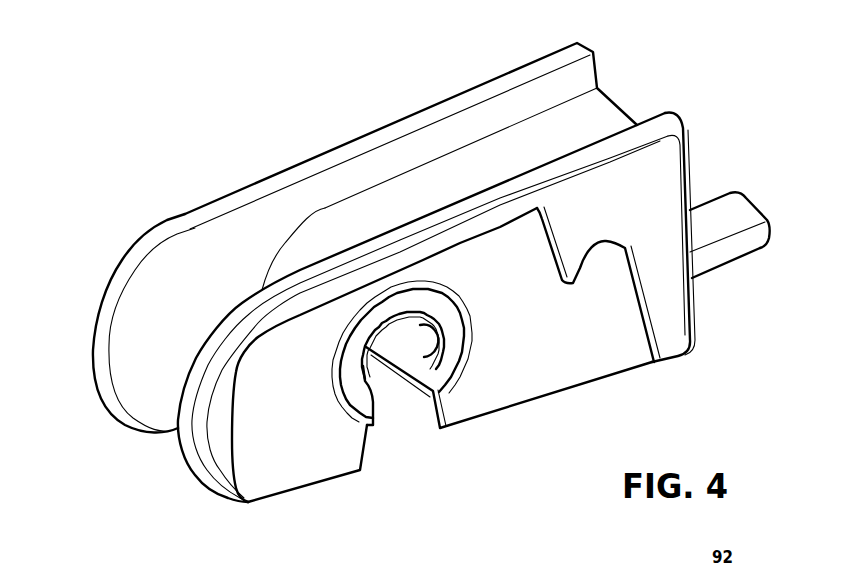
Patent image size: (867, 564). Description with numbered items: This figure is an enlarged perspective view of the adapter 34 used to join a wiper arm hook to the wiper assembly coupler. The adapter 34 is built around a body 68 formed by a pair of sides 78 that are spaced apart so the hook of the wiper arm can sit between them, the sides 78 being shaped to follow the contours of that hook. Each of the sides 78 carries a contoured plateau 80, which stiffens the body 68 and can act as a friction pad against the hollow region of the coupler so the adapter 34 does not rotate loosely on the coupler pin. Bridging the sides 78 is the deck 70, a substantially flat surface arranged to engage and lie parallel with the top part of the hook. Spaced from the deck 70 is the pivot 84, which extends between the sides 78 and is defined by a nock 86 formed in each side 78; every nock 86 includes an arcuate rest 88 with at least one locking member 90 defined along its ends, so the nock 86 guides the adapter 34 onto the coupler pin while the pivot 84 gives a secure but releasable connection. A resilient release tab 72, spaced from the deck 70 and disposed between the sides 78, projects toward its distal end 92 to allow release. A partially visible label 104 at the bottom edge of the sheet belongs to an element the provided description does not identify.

The adapter 34 is at (86, 179).
The body 68 is at (462, 89).
The deck 70 is at (491, 175).
The release tab 72 is at (747, 256).
The sides 78 is at (303, 158).
The contoured plateau 80 is at (651, 186).
The pivot 84 is at (367, 385).
The nock 86 is at (390, 428).
The arcuate rest 88 is at (428, 352).
The locking member 90 is at (428, 362).
The distal end 92 is at (753, 203).
The adjacent figure element 104 is at (566, 559).